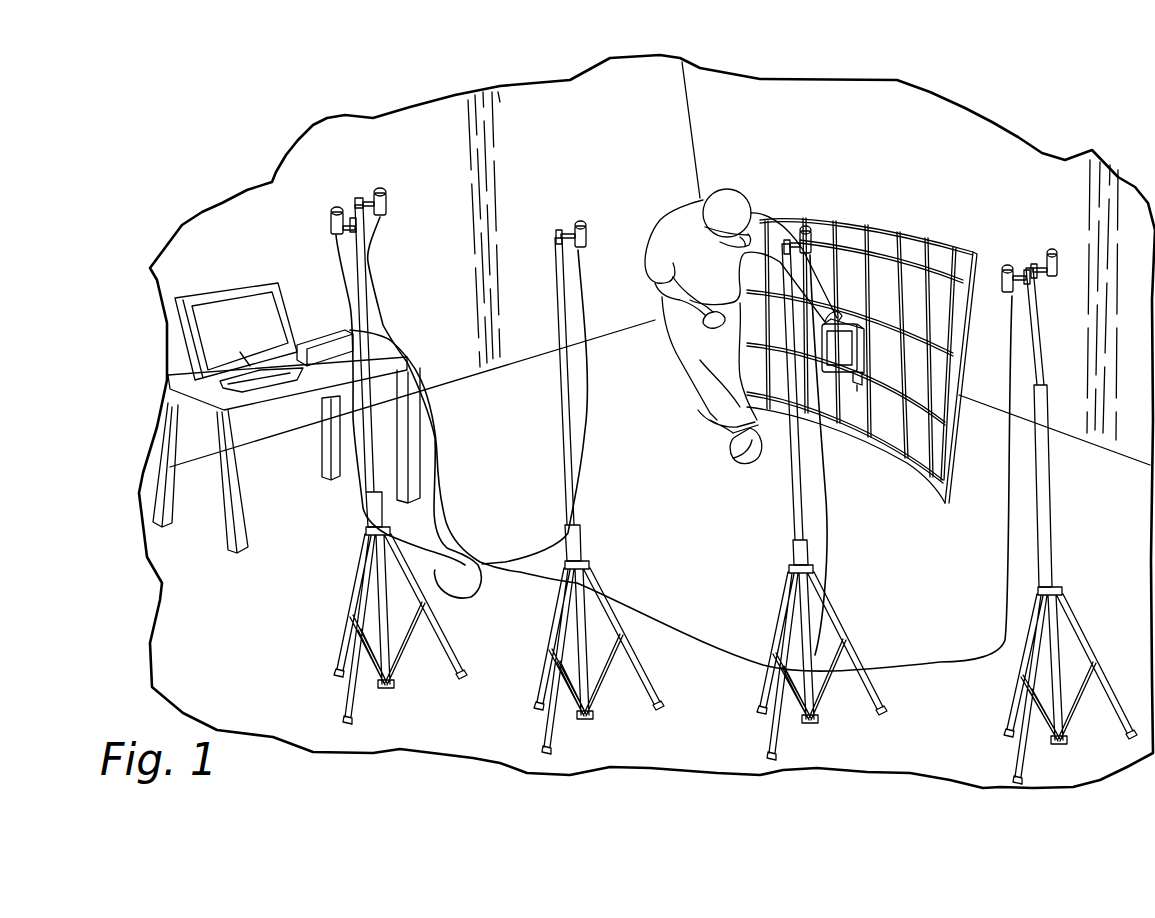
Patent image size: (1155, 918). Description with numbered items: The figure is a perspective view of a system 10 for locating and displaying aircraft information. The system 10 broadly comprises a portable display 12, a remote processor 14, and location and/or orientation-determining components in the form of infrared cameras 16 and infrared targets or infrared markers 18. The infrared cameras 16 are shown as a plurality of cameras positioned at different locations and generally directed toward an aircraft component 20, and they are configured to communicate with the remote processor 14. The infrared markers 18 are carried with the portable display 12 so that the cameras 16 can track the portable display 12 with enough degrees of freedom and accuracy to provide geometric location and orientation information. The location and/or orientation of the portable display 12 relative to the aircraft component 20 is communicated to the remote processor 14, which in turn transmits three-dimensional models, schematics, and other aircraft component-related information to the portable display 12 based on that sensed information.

The system for locating and displaying aircraft information 10 is at (364, 90).
The portable display 12 is at (866, 355).
The remote processor 14 is at (345, 332).
The infrared cameras 16 is at (378, 190).
The infrared markers 18 is at (857, 374).
The aircraft component 20 is at (922, 249).